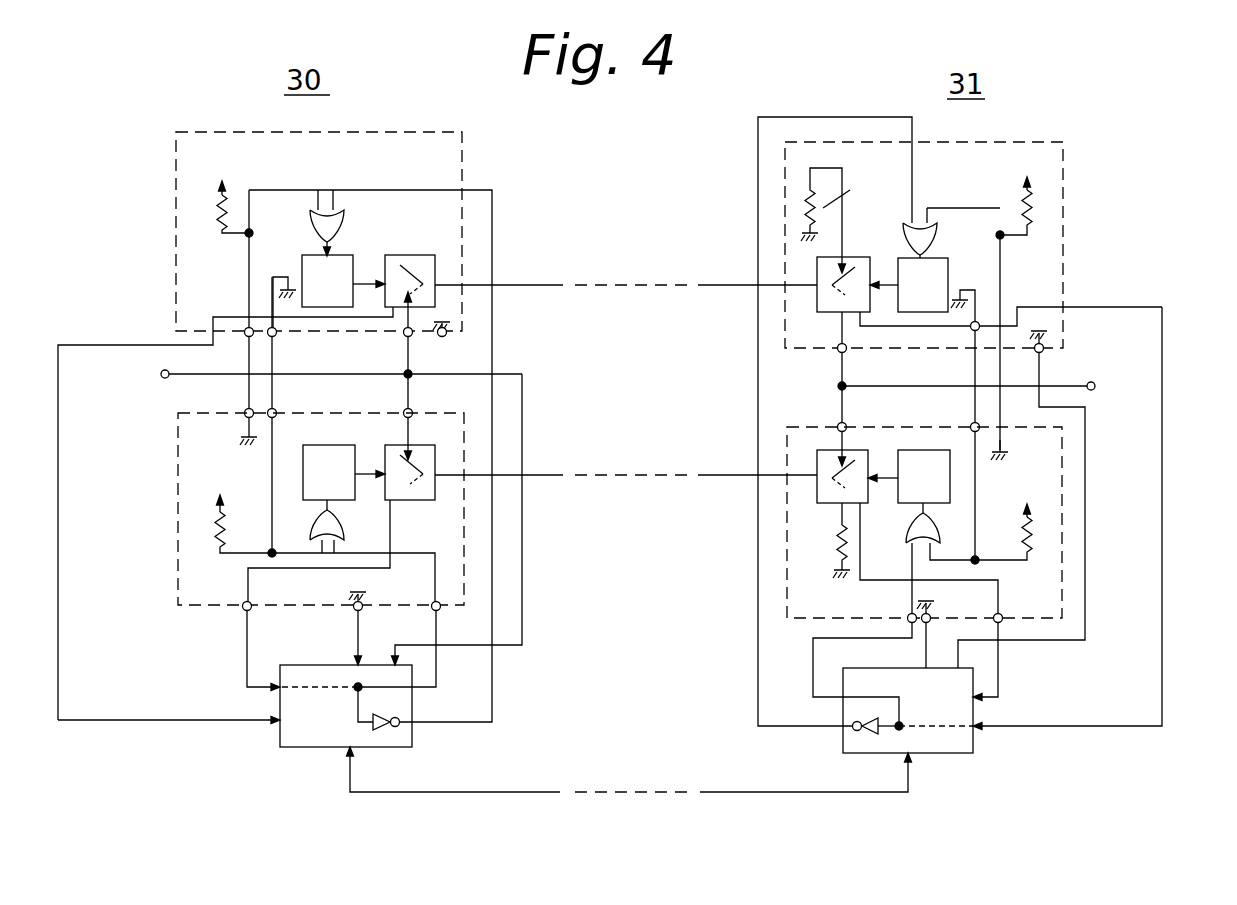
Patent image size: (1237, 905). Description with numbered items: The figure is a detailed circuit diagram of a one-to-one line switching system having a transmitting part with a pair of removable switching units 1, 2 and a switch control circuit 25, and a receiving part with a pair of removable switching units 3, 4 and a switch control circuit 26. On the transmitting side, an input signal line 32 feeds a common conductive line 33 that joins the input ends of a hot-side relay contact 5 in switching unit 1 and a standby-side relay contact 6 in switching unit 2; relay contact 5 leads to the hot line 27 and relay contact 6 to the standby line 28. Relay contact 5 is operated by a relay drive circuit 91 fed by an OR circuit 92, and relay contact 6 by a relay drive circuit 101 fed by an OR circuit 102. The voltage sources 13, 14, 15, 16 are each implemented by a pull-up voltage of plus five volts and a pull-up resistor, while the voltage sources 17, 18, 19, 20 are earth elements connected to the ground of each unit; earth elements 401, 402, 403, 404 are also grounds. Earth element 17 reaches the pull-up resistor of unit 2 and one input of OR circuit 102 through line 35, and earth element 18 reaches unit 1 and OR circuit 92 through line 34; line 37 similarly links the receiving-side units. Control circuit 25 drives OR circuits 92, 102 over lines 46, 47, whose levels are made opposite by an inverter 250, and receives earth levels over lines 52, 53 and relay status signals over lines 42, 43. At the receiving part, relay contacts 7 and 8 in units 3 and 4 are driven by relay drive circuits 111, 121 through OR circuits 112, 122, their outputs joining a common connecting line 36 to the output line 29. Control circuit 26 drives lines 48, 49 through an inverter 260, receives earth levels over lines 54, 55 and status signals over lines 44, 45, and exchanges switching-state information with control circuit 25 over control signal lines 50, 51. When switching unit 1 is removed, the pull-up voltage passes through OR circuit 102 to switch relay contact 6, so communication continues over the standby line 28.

The switching unit 1 is at (178, 451).
The switching unit 2 is at (176, 223).
The switching unit 3 is at (1063, 572).
The switching unit 4 is at (1063, 265).
The relay contact 5 is at (424, 446).
The relay contact 6 is at (424, 256).
The relay contact 7 is at (856, 450).
The relay contact 8 is at (855, 258).
The voltage source 13 is at (213, 518).
The voltage source 14 is at (236, 190).
The voltage source 15 is at (1035, 515).
The voltage source 16 is at (1040, 191).
The earth element 17 is at (249, 441).
The earth element 18 is at (273, 300).
The earth element 19 is at (1008, 453).
The earth element 20 is at (978, 306).
The switch control circuit 25 is at (290, 748).
The switch control circuit 26 is at (955, 755).
The hot line 27 is at (628, 471).
The standby line 28 is at (628, 281).
The output line 29 is at (1060, 388).
The input signal line 32 is at (178, 380).
The conductive line 33 is at (408, 358).
The line 34 is at (272, 363).
The line 35 is at (249, 361).
The common connecting conductive line 36 is at (975, 373).
The line 37 is at (1000, 379).
The line 42 is at (247, 642).
The line 43 is at (133, 722).
The line 44 is at (972, 581).
The line 45 is at (1162, 589).
The line 46 is at (436, 671).
The line 47 is at (492, 678).
The line 48 is at (813, 668).
The line 49 is at (758, 688).
The control signal line 50 is at (410, 793).
The control signal line 51 is at (840, 794).
The line 52 is at (358, 639).
The line 53 is at (522, 611).
The line 54 is at (926, 653).
The line 55 is at (1033, 642).
The relay drive circuit 91 is at (313, 445).
The OR circuit 92 is at (345, 518).
The relay drive circuit 101 is at (343, 256).
The OR circuit 102 is at (343, 214).
The relay drive circuit 111 is at (933, 450).
The OR circuit 112 is at (905, 530).
The relay drive circuit 121 is at (947, 272).
The OR circuit 122 is at (938, 232).
The inverter 250 is at (393, 729).
The inverter 260 is at (865, 737).
The earth element 401 is at (366, 592).
The earth element 402 is at (452, 318).
The earth element 403 is at (918, 607).
The earth element 404 is at (1048, 331).